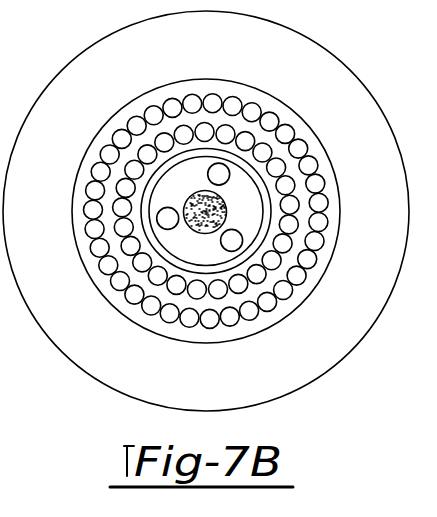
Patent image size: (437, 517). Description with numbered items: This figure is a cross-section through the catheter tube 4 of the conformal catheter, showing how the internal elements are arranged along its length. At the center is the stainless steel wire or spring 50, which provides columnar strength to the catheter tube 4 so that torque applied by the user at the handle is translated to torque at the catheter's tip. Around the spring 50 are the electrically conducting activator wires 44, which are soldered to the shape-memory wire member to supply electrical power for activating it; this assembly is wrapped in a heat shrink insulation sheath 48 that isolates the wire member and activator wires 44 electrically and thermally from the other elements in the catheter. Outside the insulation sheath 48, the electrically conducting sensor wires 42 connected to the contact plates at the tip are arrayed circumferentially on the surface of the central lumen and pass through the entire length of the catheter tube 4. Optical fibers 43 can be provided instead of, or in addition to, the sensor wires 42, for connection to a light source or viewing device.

The catheter tube 4 is at (325, 353).
The sensor wire 42 is at (150, 315).
The optical fibers 43 is at (135, 139).
The activator wire 44 is at (221, 174).
The insulation sheath 48 is at (145, 200).
The spring 50 is at (191, 193).